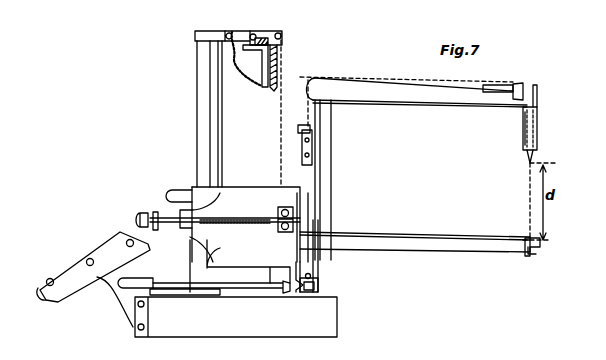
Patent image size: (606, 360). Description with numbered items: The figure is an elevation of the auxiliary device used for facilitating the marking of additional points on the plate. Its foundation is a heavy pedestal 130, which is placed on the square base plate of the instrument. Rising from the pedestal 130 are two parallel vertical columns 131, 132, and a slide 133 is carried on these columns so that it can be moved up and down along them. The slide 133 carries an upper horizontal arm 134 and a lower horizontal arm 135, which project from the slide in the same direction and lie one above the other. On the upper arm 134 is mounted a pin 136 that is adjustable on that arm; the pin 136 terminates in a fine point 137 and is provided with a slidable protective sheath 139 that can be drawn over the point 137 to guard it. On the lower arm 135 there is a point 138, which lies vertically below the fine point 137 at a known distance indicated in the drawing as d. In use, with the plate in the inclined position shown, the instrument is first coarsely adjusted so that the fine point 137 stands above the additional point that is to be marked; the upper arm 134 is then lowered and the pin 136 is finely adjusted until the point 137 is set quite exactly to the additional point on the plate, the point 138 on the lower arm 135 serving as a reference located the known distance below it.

The pedestal 130 is at (330, 320).
The vertical column 131 is at (254, 104).
The vertical column 132 is at (208, 83).
The slide 133 is at (230, 203).
The upper horizontal arm 134 is at (360, 92).
The lower horizontal arm 135 is at (378, 247).
The pin 136 is at (536, 128).
The fine point 137 is at (528, 155).
The point 138 is at (540, 250).
The protective sheath 139 is at (537, 145).